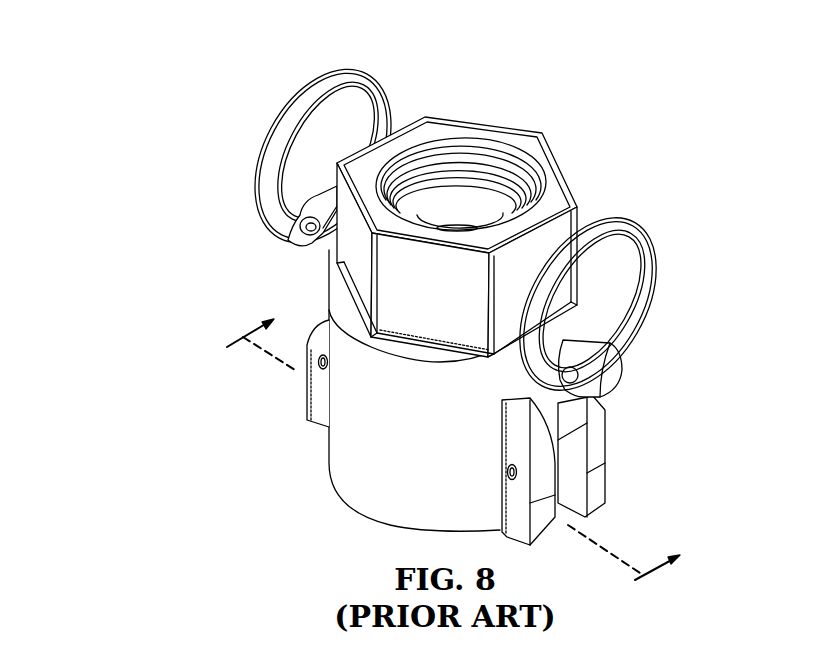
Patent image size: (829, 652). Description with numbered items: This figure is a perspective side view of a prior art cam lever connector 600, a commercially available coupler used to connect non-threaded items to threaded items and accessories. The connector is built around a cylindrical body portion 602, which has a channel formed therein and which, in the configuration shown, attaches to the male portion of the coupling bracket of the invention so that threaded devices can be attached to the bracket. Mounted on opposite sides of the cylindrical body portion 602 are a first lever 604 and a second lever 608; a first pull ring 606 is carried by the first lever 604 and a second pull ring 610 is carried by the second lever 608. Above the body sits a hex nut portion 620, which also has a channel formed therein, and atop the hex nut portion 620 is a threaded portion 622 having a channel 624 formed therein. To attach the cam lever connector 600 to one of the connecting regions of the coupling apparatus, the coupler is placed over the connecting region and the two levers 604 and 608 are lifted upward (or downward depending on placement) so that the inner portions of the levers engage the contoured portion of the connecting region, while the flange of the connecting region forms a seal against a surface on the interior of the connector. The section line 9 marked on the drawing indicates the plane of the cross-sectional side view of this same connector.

The cam lever connector 600 is at (420, 296).
The cylindrical body portion 602 is at (433, 447).
The first lever 604 is at (308, 247).
The first pull ring 606 is at (318, 73).
The second lever 608 is at (607, 390).
The second pull ring 610 is at (650, 232).
The hex nut portion 620 is at (457, 304).
The threaded portion 622 is at (460, 138).
The channel 624 is at (502, 175).
The section line 9- 9 is at (459, 444).